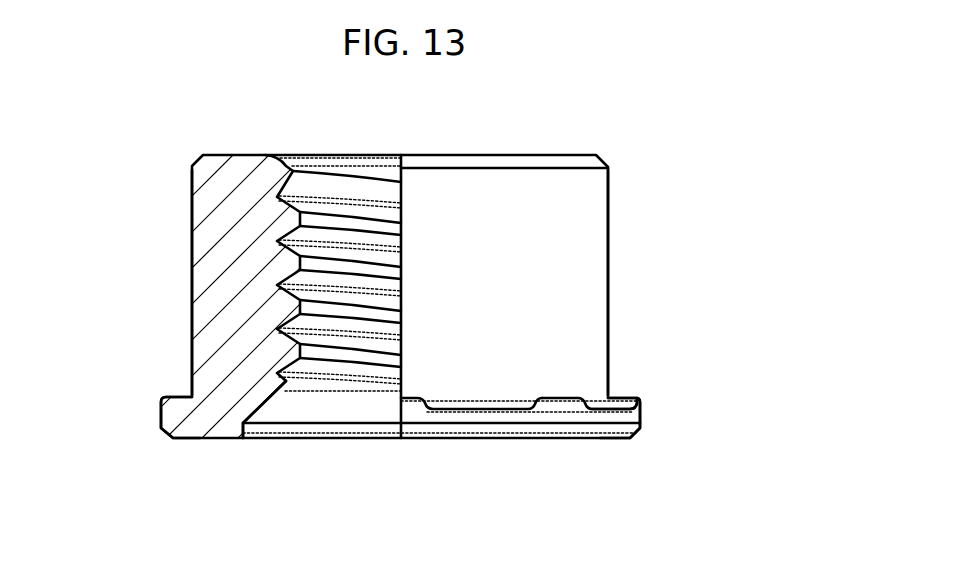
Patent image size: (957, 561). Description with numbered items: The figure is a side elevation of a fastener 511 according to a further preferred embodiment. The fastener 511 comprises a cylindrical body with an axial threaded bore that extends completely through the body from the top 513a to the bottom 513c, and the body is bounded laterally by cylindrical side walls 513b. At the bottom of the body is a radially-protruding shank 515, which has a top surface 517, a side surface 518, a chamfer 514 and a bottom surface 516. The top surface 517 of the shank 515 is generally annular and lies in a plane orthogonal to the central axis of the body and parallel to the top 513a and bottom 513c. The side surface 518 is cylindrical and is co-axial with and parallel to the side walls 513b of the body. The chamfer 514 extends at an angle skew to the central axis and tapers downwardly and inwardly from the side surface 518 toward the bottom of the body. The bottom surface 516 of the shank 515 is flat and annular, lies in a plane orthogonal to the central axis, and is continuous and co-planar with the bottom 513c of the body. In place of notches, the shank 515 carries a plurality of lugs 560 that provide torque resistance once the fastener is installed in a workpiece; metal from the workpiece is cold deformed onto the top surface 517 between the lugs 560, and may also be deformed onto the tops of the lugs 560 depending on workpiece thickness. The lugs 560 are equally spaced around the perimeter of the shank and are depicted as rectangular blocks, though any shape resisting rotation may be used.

The fastener 511 is at (655, 215).
The top of the body 513a is at (470, 163).
The side walls of the body 513b is at (192, 237).
The bottom of the body 513c is at (507, 438).
The chamfer 514 is at (637, 435).
The shank 515 is at (158, 407).
The bottom surface of the shank 516 is at (265, 438).
The top surface of the shank 517 is at (620, 397).
The side surface of the shank 518 is at (640, 412).
The lugs 560 is at (418, 396).